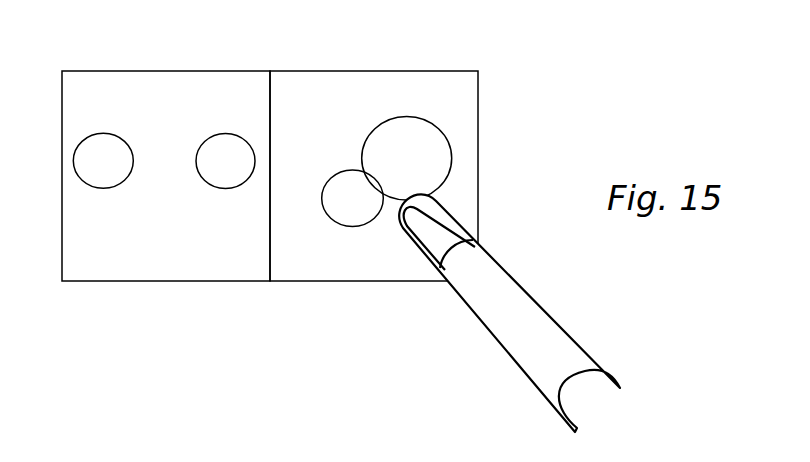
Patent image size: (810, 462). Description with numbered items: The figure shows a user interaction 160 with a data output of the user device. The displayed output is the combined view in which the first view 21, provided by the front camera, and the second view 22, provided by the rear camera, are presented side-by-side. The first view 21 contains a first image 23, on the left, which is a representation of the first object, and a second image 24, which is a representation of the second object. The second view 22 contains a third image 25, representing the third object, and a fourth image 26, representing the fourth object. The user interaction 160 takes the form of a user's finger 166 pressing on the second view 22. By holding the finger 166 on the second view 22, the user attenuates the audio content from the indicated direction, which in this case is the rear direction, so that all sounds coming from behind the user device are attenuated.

The user interaction 160 is at (110, 334).
The first view 21 is at (165, 70).
The second view 22 is at (362, 68).
The first image 23 is at (108, 131).
The second image 24 is at (227, 132).
The third image 25 is at (404, 116).
The fourth image 26 is at (332, 223).
The user's finger 166 is at (577, 335).